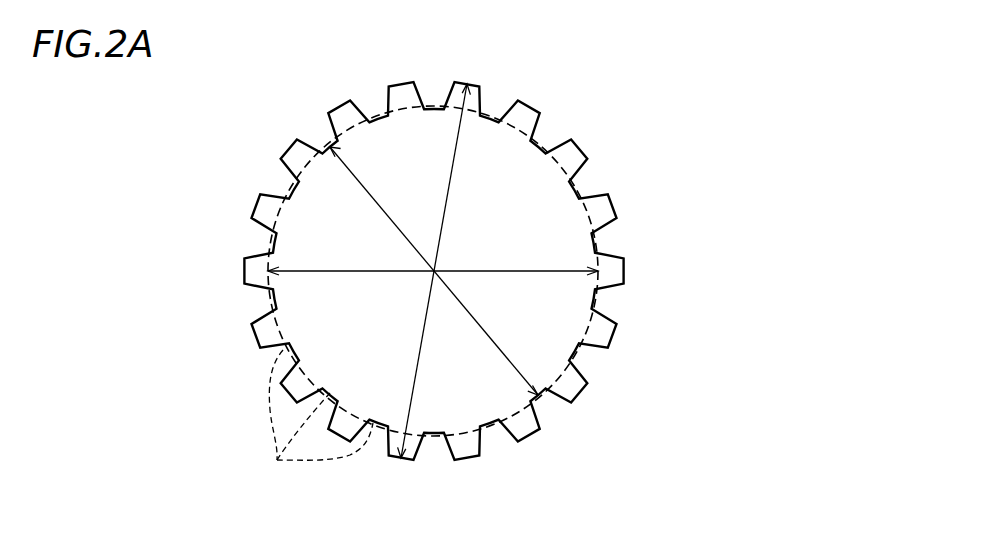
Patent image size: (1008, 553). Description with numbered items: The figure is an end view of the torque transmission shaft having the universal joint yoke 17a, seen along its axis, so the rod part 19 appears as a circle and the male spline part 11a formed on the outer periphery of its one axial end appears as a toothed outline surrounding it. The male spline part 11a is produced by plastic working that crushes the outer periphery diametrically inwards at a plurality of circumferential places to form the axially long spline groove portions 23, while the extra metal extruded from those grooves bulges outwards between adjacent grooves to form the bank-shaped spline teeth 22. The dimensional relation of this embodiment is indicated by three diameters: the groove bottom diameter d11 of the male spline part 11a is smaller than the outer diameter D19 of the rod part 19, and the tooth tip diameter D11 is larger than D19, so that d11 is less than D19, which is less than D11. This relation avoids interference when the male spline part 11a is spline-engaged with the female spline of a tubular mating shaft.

The torque transmission shaft having the universal joint yoke 17a is at (593, 140).
The rod part 19 is at (548, 237).
The male spline part 11a is at (615, 272).
The spline teeth 22 is at (605, 333).
The spline groove portions 23 is at (312, 420).
The tooth tip diameter D11 is at (448, 188).
The outer diameter of the rod part D19 is at (347, 277).
The groove bottom diameter d11 is at (488, 335).